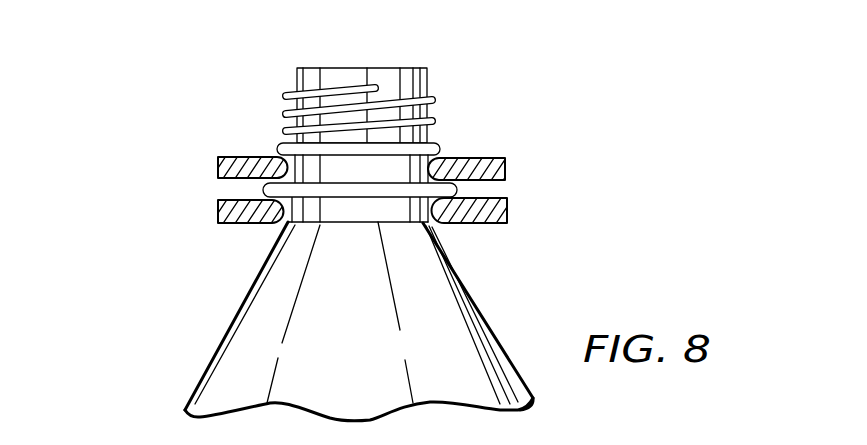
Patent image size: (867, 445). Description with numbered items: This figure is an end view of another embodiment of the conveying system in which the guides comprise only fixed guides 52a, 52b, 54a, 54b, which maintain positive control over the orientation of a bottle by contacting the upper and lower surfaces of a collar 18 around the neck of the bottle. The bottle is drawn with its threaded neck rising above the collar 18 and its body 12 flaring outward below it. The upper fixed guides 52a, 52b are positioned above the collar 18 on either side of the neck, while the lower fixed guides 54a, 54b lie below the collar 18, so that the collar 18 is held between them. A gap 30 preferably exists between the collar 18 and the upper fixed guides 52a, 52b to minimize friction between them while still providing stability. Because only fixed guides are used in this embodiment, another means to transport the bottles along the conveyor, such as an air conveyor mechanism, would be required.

The container body 12 is at (486, 318).
The collar 18 is at (358, 222).
The gap 30 is at (464, 158).
The fixed guide 52a is at (250, 157).
The fixed guide 52b is at (505, 159).
The fixed guide 54a is at (218, 213).
The fixed guide 54b is at (507, 210).